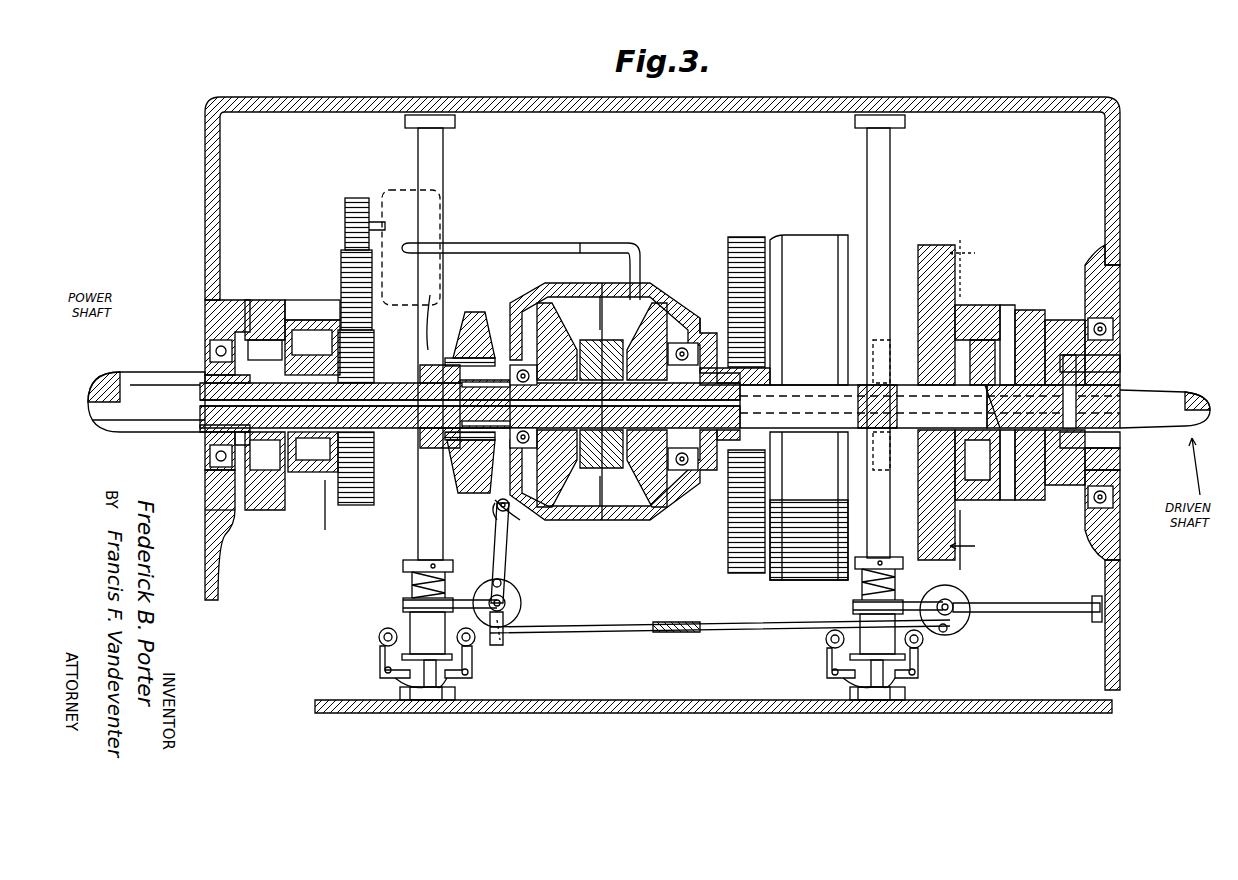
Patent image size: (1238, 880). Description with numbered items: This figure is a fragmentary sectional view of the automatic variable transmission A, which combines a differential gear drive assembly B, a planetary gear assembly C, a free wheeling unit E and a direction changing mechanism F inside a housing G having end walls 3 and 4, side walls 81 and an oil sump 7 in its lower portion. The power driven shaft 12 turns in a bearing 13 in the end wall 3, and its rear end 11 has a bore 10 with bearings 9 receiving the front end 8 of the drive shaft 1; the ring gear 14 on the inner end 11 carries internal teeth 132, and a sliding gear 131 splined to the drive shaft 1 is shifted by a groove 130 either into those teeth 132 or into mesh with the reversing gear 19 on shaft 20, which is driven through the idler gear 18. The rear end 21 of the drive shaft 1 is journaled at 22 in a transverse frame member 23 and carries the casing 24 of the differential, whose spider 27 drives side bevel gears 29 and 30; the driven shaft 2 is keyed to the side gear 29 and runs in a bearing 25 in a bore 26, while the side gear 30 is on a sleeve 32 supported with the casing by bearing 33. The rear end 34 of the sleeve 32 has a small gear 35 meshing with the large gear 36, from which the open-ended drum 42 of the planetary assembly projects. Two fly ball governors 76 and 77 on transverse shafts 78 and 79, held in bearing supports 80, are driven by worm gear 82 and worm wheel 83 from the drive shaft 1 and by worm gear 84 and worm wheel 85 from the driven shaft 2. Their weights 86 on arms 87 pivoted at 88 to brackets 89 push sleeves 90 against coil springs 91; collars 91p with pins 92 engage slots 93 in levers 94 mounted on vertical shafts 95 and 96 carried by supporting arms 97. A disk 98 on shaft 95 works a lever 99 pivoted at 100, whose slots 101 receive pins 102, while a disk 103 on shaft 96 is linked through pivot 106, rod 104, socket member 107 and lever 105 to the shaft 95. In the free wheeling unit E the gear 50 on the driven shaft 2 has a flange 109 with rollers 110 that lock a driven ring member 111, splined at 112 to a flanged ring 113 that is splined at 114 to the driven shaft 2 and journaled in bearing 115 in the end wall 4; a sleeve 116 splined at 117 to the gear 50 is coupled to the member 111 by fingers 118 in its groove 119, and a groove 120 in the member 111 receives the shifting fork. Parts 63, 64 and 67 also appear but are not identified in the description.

The automatic variable transmission A is at (786, 152).
The differential gear drive assembly B is at (653, 275).
The planetary gear assembly C is at (798, 231).
The free wheeling unit E is at (1118, 280).
The direction changing mechanism F is at (319, 493).
The housing G is at (198, 235).
The drive shaft 1 is at (385, 383).
The driven shaft 2 is at (1148, 392).
The end wall 3 is at (205, 296).
The end wall 4 is at (1108, 530).
The oil sump 7 is at (970, 401).
The front end of the drive shaft 8 is at (320, 490).
The bearings 9 is at (220, 440).
The bore 10 is at (200, 432).
The rear end of the power driven shaft 11 is at (193, 371).
The power driven shaft 12 is at (127, 371).
The bearing 13 is at (215, 472).
The ring gear 14 is at (262, 300).
The idler gear 18 is at (355, 505).
The reversing gear 19 is at (372, 334).
The shaft 20 is at (298, 298).
The rear end of the drive shaft 21 is at (430, 448).
The journal 22 is at (483, 340).
The transverse frame member 23 is at (455, 480).
The casing 24 is at (547, 228).
The bearing 25 is at (450, 460).
The bore 26 is at (455, 340).
The spider 27 is at (598, 338).
The side bevel gear 29 is at (527, 305).
The side bevel gear 30 is at (672, 305).
The sleeve 32 is at (712, 475).
The bearing 33 is at (705, 520).
The rear end of the sleeve 34 is at (770, 375).
The small gear 35 is at (765, 360).
The large gear 36 is at (728, 548).
The open-ended drum 42 is at (790, 580).
The gear 50 is at (943, 248).
The shifter fork 63 is at (415, 225).
The gear 64 is at (357, 198).
The rod 67 is at (595, 238).
The fly ball governor 76 is at (420, 700).
The fly ball governor 77 is at (855, 700).
The governor shaft 78 is at (418, 527).
The governor shaft 79 is at (870, 178).
The bearing supports 80 is at (875, 700).
The side walls 81 is at (705, 713).
The worm gear 82 is at (425, 432).
The worm wheel 83 is at (428, 340).
The worm gear 84 is at (858, 395).
The worm wheel 85 is at (865, 451).
The balls 86 is at (922, 645).
The arms 87 is at (920, 672).
The pivot 88 is at (918, 678).
The brackets 89 is at (890, 700).
The sleeves 90 is at (850, 648).
The coil springs 91 is at (855, 567).
The collars 91p is at (853, 612).
The pins 92 is at (651, 633).
The elongated slots 93 is at (445, 582).
The levers 94 is at (890, 606).
The vertical shaft 95 is at (506, 608).
The vertical shaft 96 is at (965, 598).
The supporting arms 97 is at (720, 630).
The disk 98 is at (520, 600).
The lever 99 is at (510, 540).
The pivot 100 is at (497, 520).
The slots 101 is at (495, 572).
The pins 102 is at (503, 583).
The disk 103 is at (970, 612).
The rod 104 is at (735, 628).
The lever 105 is at (510, 620).
The pivot 106 is at (960, 626).
The socket member 107 is at (675, 622).
The flange 109 is at (990, 340).
The rollers 110 is at (1007, 312).
The driven ring member 111 is at (1000, 305).
The spline 112 is at (1060, 500).
The flanged ring 113 is at (1105, 478).
The spline 114 is at (1118, 358).
The bearing 115 is at (1115, 328).
The sleeve 116 is at (1110, 443).
The spline 117 is at (980, 392).
The fingers 118 is at (1010, 540).
The circumferential groove 119 is at (985, 500).
The circumferential groove 120 is at (1010, 497).
The groove 130 is at (338, 517).
The sliding gear 131 is at (278, 510).
The teeth 132 is at (225, 497).